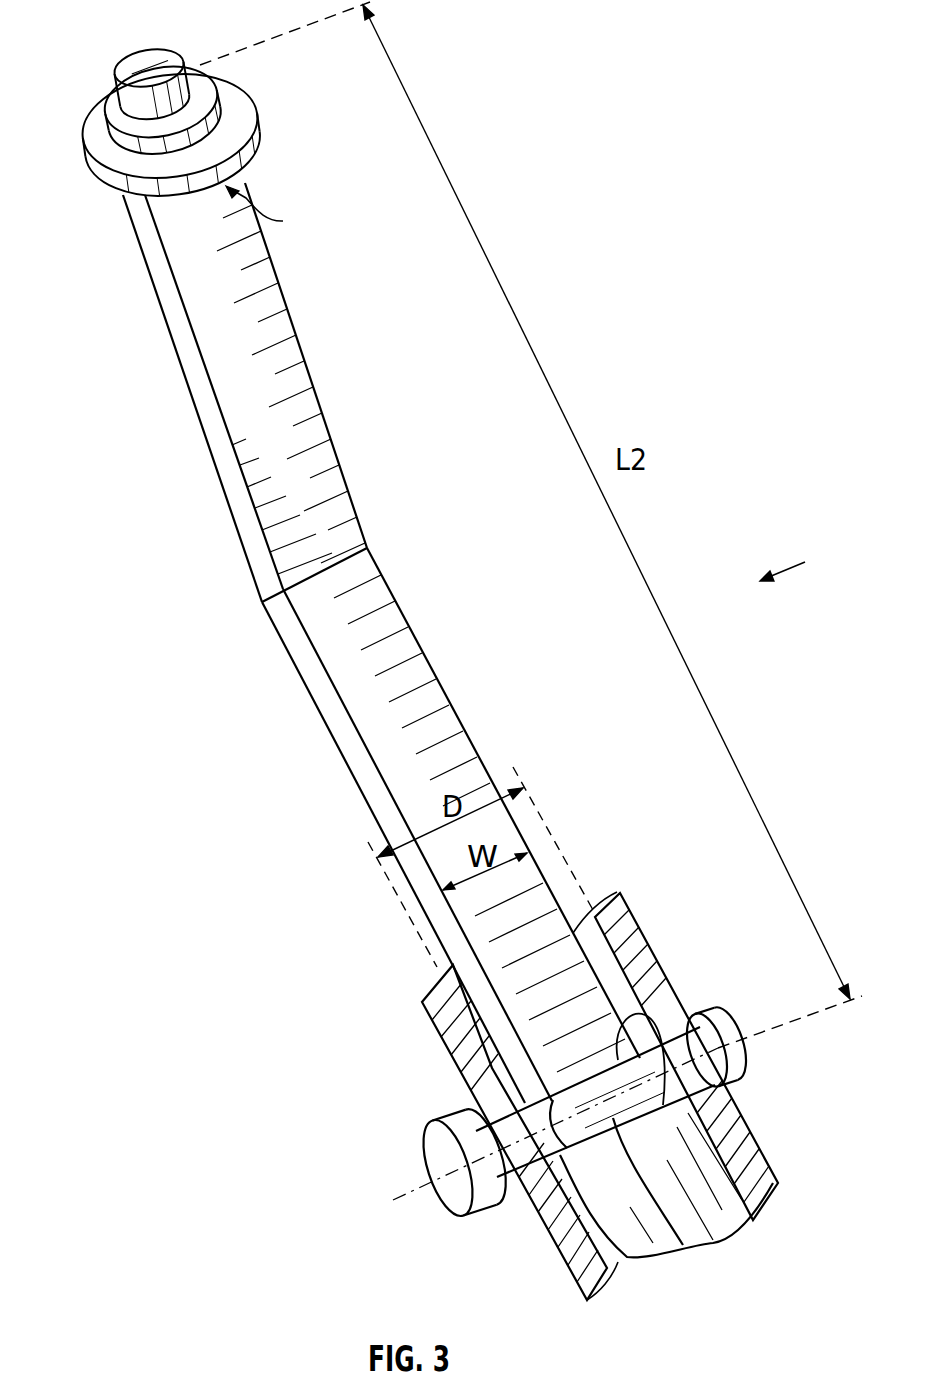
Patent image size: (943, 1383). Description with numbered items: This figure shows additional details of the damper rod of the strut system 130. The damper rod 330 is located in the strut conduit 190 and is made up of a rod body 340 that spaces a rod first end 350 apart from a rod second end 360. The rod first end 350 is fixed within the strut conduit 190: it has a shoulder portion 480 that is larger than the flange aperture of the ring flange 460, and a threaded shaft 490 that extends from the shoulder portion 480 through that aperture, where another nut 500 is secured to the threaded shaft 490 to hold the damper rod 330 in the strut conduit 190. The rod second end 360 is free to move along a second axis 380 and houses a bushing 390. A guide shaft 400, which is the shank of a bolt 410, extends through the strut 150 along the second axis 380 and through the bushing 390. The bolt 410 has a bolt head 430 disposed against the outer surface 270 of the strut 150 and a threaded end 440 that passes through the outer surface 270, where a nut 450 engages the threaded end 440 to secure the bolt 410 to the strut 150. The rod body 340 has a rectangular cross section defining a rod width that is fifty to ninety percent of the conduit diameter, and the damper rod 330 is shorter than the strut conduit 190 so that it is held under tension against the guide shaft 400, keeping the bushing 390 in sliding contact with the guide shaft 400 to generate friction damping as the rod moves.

The strut system 130 is at (806, 563).
The strut 150 is at (613, 897).
The strut conduit 190 is at (740, 1200).
The outer surface 270 is at (462, 1072).
The damper rod 330 is at (240, 521).
The rod body 340 is at (400, 630).
The rod first end 350 is at (150, 246).
The rod second end 360 is at (622, 1048).
The second axis 380 is at (422, 1185).
The bushing 390 is at (683, 1232).
The guide shaft 400 is at (617, 1262).
The bolt 410 is at (497, 1208).
The bolt head 430 is at (460, 1200).
The threaded end 440 is at (750, 1057).
The nut 450 is at (720, 1030).
The ring flange 460 is at (95, 175).
The shoulder portion 480 is at (277, 212).
The threaded shaft 490 is at (116, 78).
The nut 500 is at (216, 112).